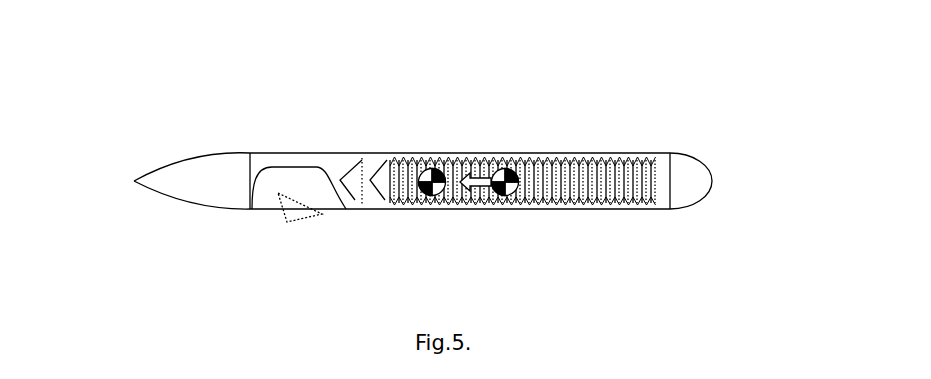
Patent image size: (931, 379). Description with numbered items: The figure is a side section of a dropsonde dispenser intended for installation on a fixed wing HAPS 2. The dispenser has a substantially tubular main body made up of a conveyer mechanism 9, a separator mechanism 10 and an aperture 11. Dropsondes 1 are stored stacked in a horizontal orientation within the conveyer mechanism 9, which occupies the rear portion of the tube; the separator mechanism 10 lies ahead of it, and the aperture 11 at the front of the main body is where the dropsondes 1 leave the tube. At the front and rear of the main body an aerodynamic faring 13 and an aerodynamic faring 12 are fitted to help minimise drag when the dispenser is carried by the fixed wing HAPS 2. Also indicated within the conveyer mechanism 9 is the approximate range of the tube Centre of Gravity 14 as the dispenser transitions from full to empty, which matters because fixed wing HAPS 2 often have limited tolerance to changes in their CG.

The fixed wing HAPS 2 is at (101, 90).
The dropsonde 1 is at (353, 158).
The tube Centre of Gravity 14 is at (467, 170).
The aerodynamic faring 13 is at (188, 212).
The aerodynamic faring 12 is at (703, 210).
The aperture 11 is at (248, 218).
The separator mechanism 10 is at (336, 218).
The conveyer mechanism 9 is at (393, 218).